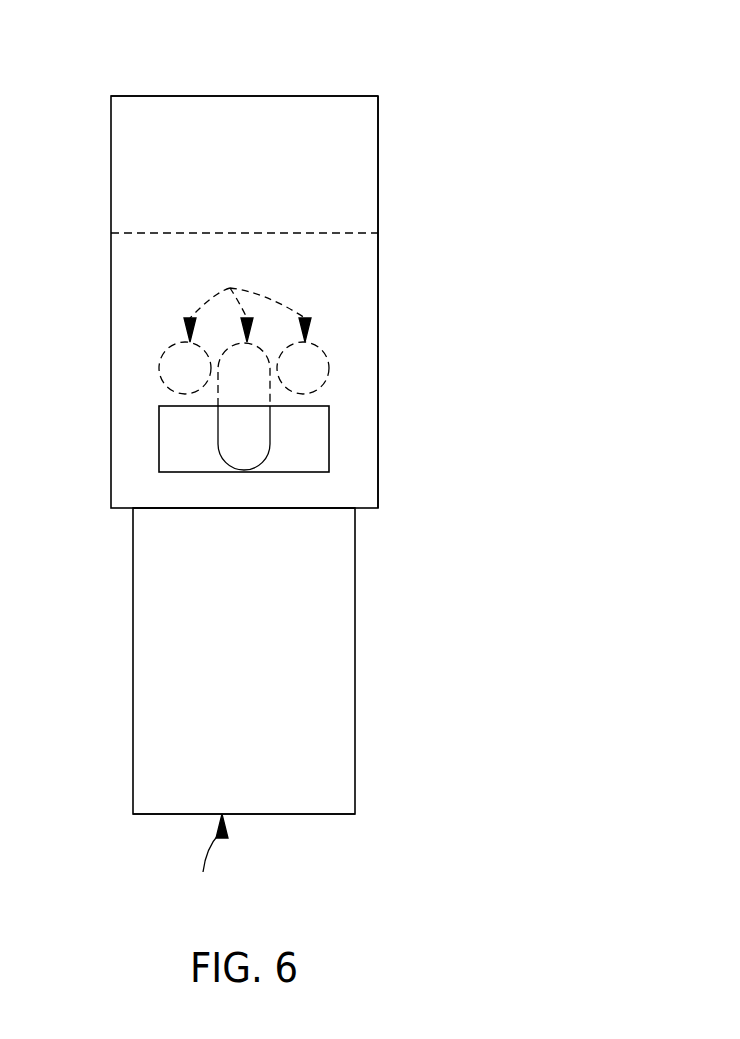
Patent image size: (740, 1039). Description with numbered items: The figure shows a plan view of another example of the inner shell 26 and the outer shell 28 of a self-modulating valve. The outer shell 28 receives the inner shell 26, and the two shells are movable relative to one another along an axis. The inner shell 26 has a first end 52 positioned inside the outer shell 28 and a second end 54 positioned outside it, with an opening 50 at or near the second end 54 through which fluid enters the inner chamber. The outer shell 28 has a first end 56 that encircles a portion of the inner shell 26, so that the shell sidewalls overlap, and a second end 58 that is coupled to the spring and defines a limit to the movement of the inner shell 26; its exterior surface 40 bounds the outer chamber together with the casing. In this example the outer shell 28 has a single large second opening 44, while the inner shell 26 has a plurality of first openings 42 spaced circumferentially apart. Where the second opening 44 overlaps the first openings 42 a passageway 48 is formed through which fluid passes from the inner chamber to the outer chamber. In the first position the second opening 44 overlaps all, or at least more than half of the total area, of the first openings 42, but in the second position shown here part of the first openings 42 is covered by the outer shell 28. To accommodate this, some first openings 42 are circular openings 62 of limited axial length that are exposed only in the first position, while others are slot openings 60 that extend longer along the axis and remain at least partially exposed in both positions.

The inner shell 26 is at (133, 712).
The outer shell 28 is at (110, 158).
The exterior surface 40 is at (378, 392).
The first openings 42 is at (233, 286).
The second opening 44 is at (200, 453).
The passageway 48 is at (258, 453).
The opening 50 is at (211, 864).
The first end 52 is at (178, 233).
The second end 54 is at (142, 814).
The first end 56 is at (197, 508).
The second end 58 is at (208, 96).
The slot openings 60 is at (257, 381).
The circular openings 62 is at (197, 381).